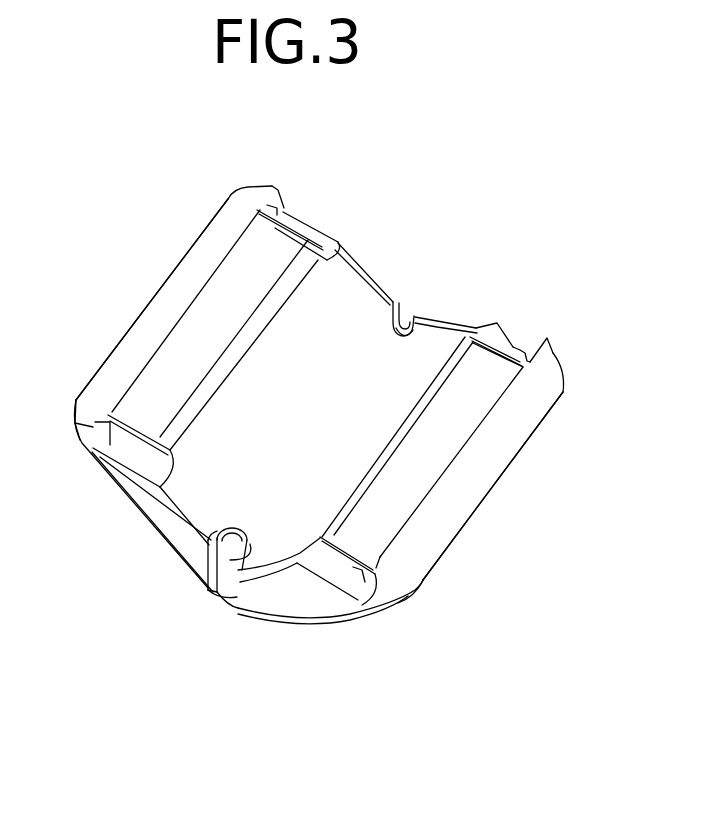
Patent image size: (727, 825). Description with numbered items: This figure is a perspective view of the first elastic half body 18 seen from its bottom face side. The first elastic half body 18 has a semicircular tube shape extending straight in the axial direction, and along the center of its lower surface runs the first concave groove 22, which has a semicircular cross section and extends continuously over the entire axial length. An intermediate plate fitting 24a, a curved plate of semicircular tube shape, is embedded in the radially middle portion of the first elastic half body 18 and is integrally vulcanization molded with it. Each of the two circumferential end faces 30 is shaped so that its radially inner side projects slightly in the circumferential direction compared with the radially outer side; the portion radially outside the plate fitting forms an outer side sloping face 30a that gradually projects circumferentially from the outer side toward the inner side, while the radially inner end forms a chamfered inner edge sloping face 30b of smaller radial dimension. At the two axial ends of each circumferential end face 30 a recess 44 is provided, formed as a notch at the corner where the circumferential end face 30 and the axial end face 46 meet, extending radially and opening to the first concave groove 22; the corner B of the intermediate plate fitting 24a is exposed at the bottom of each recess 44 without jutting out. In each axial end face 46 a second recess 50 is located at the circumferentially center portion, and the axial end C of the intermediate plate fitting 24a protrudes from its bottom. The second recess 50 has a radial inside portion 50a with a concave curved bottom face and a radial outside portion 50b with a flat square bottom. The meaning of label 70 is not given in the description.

The first elastic half body 18 is at (468, 232).
The first concave groove 22 is at (340, 318).
The intermediate plate fitting 24a is at (265, 208).
The circumferential end face 30 is at (195, 342).
The outer side sloping face 30a is at (190, 265).
The inner edge sloping face 30b is at (250, 333).
The recess 44 is at (313, 222).
The axial end face 46 is at (393, 308).
The second recess 50 is at (423, 318).
The radial inside portion 50a is at (400, 337).
The radial outside portion 50b is at (228, 596).
The rounded end portion of connecting strip 70 is at (332, 246).
The corner of the intermediate plate fitting B is at (282, 202).
The axial end of the intermediate plate fitting C is at (230, 563).